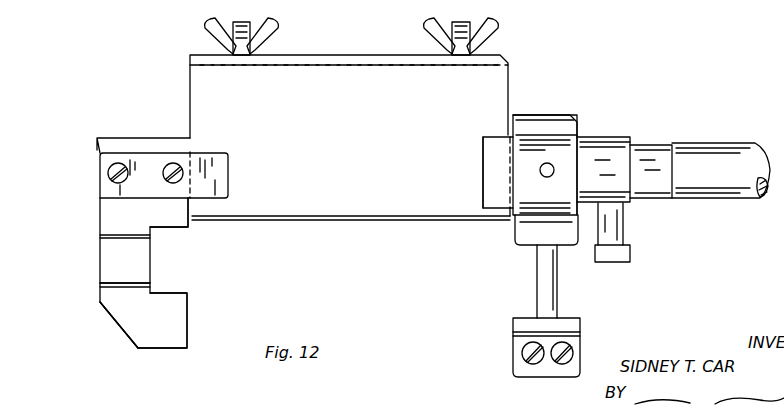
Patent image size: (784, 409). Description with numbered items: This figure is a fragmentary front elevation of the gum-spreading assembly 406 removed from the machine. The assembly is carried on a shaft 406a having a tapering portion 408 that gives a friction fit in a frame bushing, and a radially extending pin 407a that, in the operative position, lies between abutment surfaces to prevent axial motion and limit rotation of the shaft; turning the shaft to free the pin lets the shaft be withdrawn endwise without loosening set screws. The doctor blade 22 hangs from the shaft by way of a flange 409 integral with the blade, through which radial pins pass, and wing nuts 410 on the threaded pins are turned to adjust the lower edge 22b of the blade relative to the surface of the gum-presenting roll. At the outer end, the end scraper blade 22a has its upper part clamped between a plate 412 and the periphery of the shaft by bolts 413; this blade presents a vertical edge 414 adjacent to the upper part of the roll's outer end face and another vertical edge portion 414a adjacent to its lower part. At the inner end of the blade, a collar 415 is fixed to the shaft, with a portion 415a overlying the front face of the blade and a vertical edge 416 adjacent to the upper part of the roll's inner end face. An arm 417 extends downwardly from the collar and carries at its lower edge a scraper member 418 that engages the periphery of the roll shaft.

The doctor blade 22 is at (190, 70).
The scraper blade 22a is at (112, 327).
The lower edge 22b is at (328, 219).
The gum-spreading assembly 406 is at (556, 76).
The shaft 406a is at (612, 137).
The radially extending pin 407a is at (623, 240).
The tapering portion 408 is at (712, 146).
The flange 409 is at (364, 63).
The wing nuts 410 is at (204, 25).
The plate 412 is at (113, 155).
The bolts 413 is at (170, 155).
The vertical edge 414 is at (190, 228).
The vertical edge portion 414a is at (188, 318).
The collar 415 is at (578, 132).
The portion 415a is at (490, 187).
The vertical edge 416 is at (515, 237).
The arm 417 is at (537, 296).
The scraper member 418 is at (512, 360).